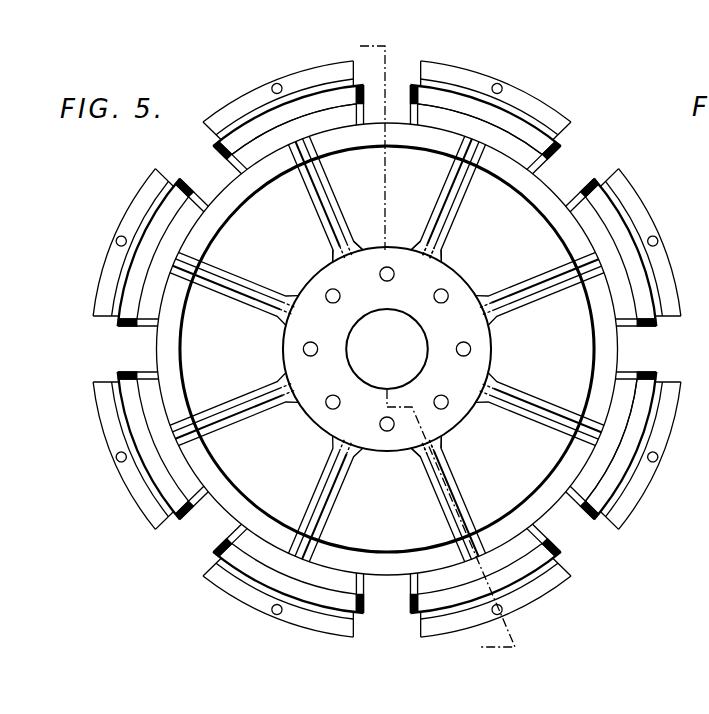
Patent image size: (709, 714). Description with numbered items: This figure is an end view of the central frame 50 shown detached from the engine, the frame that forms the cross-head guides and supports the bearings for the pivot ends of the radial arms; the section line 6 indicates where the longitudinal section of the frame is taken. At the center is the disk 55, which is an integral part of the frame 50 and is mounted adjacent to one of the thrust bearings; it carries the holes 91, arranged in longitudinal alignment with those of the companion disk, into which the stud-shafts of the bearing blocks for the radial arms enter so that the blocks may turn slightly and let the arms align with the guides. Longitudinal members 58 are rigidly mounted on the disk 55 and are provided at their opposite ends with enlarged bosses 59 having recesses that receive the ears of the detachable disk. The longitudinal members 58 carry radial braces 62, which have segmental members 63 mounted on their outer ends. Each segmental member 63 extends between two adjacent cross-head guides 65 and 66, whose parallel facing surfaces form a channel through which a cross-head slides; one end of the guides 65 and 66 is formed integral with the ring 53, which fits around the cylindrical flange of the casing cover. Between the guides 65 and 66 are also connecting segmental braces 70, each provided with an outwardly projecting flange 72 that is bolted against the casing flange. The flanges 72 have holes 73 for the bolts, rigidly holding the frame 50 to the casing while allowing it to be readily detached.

The central frame 50 is at (82, 275).
The ring 53 is at (228, 210).
The disk 55 is at (489, 342).
The longitudinal members 58 is at (356, 252).
The enlarged bosses 59 is at (451, 238).
The radial braces 62 is at (327, 176).
The segmental members 63 is at (266, 150).
The cross-head guide 65 is at (362, 92).
The cross-head guide 66 is at (408, 92).
The segmental brace 70 is at (303, 93).
The outwardly projecting flange 72 is at (313, 68).
The holes 73 is at (503, 86).
The holes 91 is at (443, 294).
The section line 6— 6 is at (356, 55).